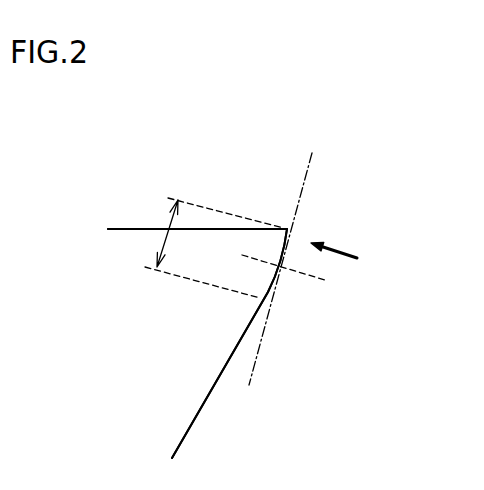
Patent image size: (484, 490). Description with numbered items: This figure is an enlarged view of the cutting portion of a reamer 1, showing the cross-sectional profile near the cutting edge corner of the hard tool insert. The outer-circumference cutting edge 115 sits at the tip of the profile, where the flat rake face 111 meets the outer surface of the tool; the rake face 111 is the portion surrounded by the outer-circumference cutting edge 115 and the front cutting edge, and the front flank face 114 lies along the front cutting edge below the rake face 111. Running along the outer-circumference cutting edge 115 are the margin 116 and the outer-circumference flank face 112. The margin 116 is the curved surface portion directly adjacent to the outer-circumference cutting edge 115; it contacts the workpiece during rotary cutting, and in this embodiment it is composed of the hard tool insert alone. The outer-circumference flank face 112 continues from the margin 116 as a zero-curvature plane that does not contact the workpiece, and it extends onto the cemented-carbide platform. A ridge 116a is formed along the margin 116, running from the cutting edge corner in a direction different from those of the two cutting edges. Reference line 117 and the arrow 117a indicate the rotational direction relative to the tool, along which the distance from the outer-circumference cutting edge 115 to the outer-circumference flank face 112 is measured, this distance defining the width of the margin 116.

The cutting tool 1 is at (381, 119).
The rake face 111 is at (122, 228).
The outer-circumference flank face 112 is at (198, 413).
The front flank face 114 is at (130, 245).
The outer-circumference cutting edge 115 is at (287, 228).
The margin 116 is at (170, 228).
The ridge 116a is at (287, 231).
The edge reference line 117 is at (302, 193).
The cutting direction 117a is at (348, 254).